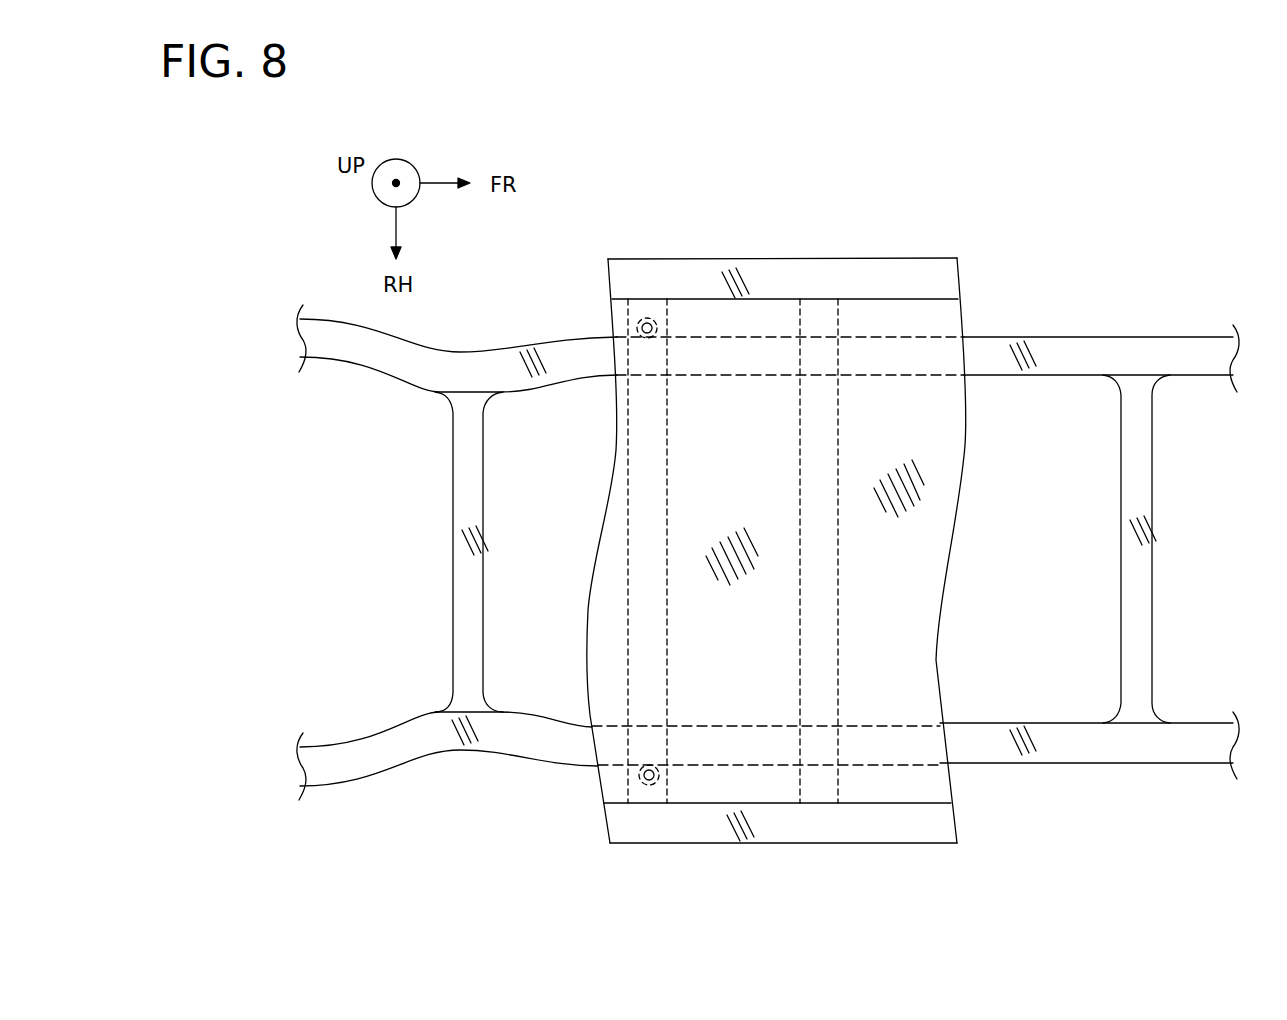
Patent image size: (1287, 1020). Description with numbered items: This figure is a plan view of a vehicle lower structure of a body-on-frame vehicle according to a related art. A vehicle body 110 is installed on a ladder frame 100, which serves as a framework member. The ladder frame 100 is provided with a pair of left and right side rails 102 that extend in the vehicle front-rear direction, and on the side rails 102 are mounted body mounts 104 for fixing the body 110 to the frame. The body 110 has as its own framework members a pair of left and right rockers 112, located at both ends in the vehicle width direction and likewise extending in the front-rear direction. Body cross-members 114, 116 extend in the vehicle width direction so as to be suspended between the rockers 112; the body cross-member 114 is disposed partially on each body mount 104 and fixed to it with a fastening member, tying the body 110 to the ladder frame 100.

The ladder frame 100 is at (1066, 338).
The side rail 102 is at (1133, 347).
The body mount 104 is at (634, 328).
The vehicle body 110 is at (962, 452).
The rocker 112 is at (845, 277).
The body cross-member 114 is at (650, 450).
The body cross-member 116 is at (830, 563).